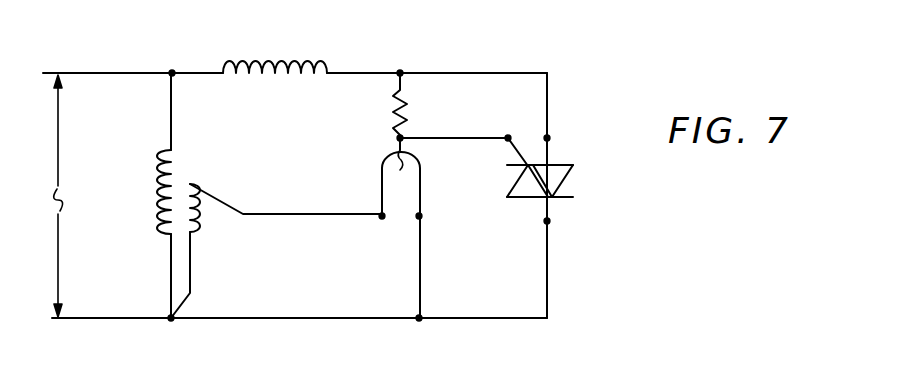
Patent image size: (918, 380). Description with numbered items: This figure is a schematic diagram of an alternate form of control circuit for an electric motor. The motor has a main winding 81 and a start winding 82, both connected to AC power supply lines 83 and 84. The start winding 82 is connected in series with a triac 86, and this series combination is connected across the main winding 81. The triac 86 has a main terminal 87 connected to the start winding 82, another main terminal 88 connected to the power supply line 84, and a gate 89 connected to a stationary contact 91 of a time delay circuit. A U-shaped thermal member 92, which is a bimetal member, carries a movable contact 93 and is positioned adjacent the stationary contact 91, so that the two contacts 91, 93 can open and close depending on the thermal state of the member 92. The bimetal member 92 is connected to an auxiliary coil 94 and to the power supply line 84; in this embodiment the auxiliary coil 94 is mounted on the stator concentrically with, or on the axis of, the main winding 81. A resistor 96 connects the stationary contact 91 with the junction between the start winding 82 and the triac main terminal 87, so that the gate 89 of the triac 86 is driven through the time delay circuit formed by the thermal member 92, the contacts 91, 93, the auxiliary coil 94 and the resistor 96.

The main winding 81 is at (156, 176).
The start winding 82 is at (285, 60).
The power supply line 83 is at (78, 73).
The power supply line 84 is at (74, 317).
The triac 86 is at (574, 178).
The main terminal 87 is at (550, 137).
The main terminal 88 is at (551, 221).
The gate 89 is at (508, 137).
The stationary contact 91 is at (398, 149).
The U-shaped thermal member 92 is at (380, 190).
The movable contact 93 is at (399, 172).
The auxiliary coil 94 is at (196, 227).
The resistor 96 is at (404, 101).